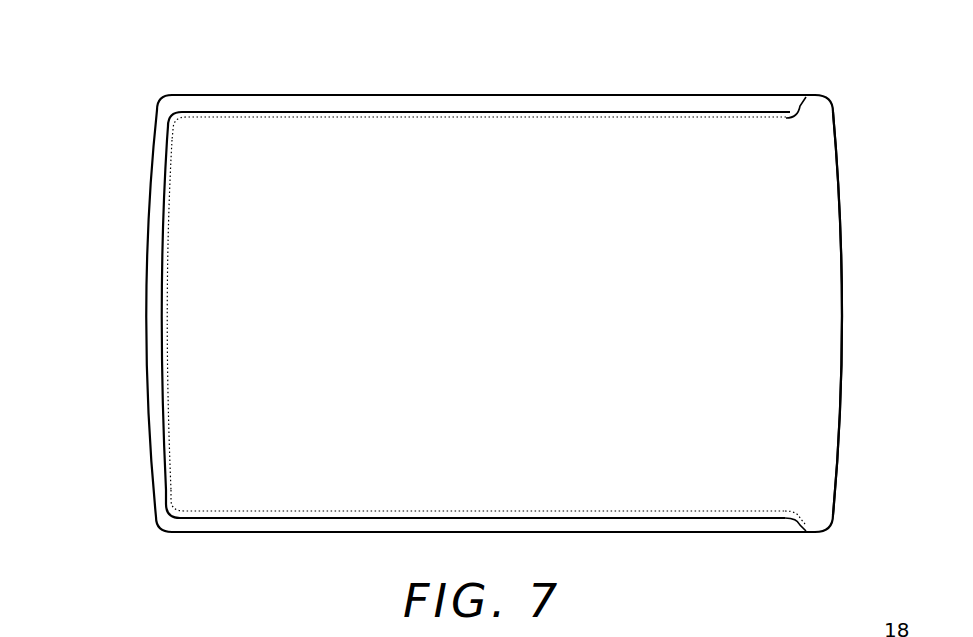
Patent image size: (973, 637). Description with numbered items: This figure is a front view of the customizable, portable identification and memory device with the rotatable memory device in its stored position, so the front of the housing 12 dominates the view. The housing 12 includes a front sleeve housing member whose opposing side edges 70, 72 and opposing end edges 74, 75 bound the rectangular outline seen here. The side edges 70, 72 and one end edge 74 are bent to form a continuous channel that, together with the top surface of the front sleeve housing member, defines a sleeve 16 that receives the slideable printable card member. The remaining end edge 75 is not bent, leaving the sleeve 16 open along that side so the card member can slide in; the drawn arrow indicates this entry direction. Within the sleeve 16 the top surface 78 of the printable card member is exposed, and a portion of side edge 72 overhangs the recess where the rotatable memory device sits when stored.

The housing 12 is at (712, 85).
The sleeve 16 is at (684, 318).
The side edge 70 is at (248, 534).
The side edge 72 is at (547, 96).
The end edge 74 is at (145, 282).
The end edge 75 is at (845, 152).
The top surface 78 is at (488, 333).